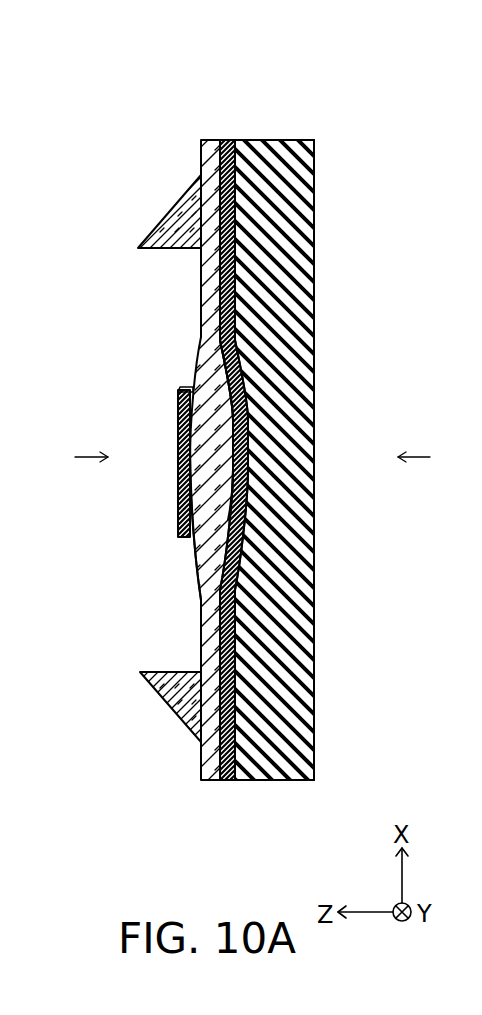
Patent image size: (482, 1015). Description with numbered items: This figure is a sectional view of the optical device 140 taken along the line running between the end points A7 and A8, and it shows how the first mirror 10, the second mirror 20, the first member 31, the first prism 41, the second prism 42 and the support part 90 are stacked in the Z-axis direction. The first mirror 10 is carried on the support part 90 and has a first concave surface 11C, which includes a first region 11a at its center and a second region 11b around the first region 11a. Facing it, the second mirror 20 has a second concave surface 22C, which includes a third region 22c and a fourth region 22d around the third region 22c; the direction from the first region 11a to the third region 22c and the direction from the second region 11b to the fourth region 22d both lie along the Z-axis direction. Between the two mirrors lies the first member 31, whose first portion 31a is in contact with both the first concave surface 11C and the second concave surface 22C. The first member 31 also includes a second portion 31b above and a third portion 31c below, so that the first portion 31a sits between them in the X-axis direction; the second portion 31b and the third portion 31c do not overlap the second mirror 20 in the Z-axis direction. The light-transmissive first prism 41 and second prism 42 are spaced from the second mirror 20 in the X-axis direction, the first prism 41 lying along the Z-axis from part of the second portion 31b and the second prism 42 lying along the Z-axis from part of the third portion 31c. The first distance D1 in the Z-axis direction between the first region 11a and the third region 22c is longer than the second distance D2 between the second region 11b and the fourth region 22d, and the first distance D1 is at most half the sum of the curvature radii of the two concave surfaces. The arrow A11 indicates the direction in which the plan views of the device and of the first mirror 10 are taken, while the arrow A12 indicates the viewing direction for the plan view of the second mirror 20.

The optical device 140 is at (363, 82).
The first mirror 10 is at (227, 160).
The first region 11a is at (228, 459).
The second region 11b is at (233, 491).
The first concave surface 11C is at (220, 368).
The second mirror 20 is at (178, 438).
The second concave surface 22C is at (193, 417).
The third region 22c is at (192, 458).
The fourth region 22d is at (193, 494).
The first member 31 is at (213, 160).
The first portion 31a is at (208, 515).
The second portion 31b is at (212, 316).
The third portion 31c is at (209, 620).
The first prism 41 is at (172, 223).
The second prism 42 is at (172, 696).
The support part 90 is at (263, 160).
The first distance D1 is at (190, 457).
The second distance D2 is at (190, 494).
The line A7-A8 end point A7 is at (314, 796).
The line A7-A8 end point A8 is at (314, 125).
The arrow A11 is at (69, 458).
The arrow A12 is at (439, 459).